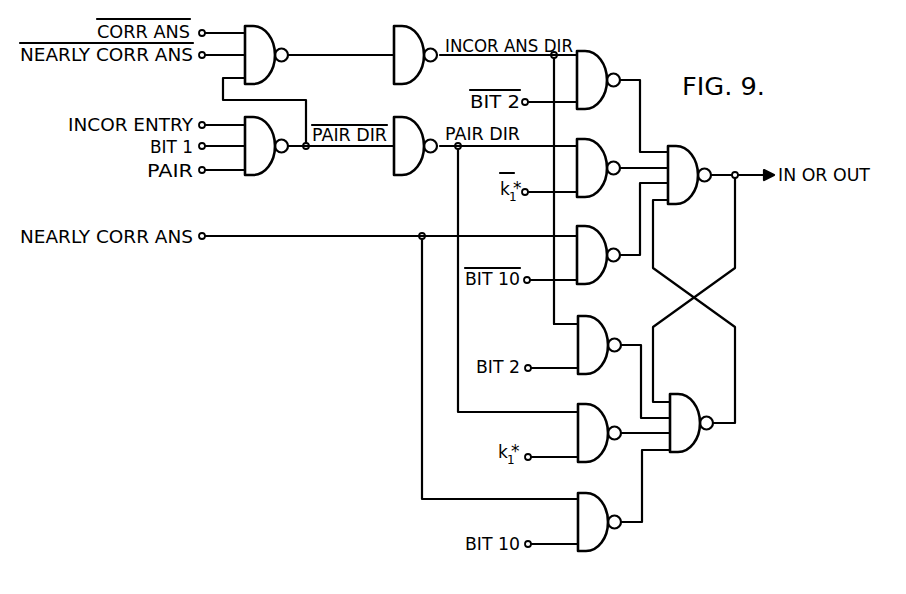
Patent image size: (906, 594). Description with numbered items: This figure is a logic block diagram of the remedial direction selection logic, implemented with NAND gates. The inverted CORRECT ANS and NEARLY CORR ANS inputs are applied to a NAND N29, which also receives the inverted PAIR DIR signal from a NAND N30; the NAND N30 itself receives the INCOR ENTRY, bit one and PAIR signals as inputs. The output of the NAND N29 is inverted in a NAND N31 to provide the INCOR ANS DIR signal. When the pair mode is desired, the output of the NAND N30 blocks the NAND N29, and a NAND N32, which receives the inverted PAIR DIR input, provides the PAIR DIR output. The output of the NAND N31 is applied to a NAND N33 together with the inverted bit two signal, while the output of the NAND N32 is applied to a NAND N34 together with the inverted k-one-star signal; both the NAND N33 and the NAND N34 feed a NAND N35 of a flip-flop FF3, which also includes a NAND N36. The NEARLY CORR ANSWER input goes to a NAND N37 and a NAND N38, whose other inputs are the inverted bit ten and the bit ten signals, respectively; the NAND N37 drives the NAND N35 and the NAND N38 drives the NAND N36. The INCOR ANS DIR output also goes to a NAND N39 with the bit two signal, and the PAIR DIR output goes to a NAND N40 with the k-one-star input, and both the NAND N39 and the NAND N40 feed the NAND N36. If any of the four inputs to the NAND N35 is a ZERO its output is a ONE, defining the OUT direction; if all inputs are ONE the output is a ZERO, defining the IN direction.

The NAND N29 is at (268, 39).
The NAND N30 is at (253, 177).
The NAND N31 is at (421, 25).
The NAND N32 is at (413, 173).
The NAND N33 is at (613, 48).
The NAND N34 is at (608, 136).
The NAND N35 is at (690, 155).
The NAND N36 is at (704, 393).
The NAND N37 is at (597, 234).
The NAND N38 is at (608, 488).
The NAND N39 is at (599, 326).
The NAND N40 is at (606, 396).
The flip-flop FF3 is at (763, 306).